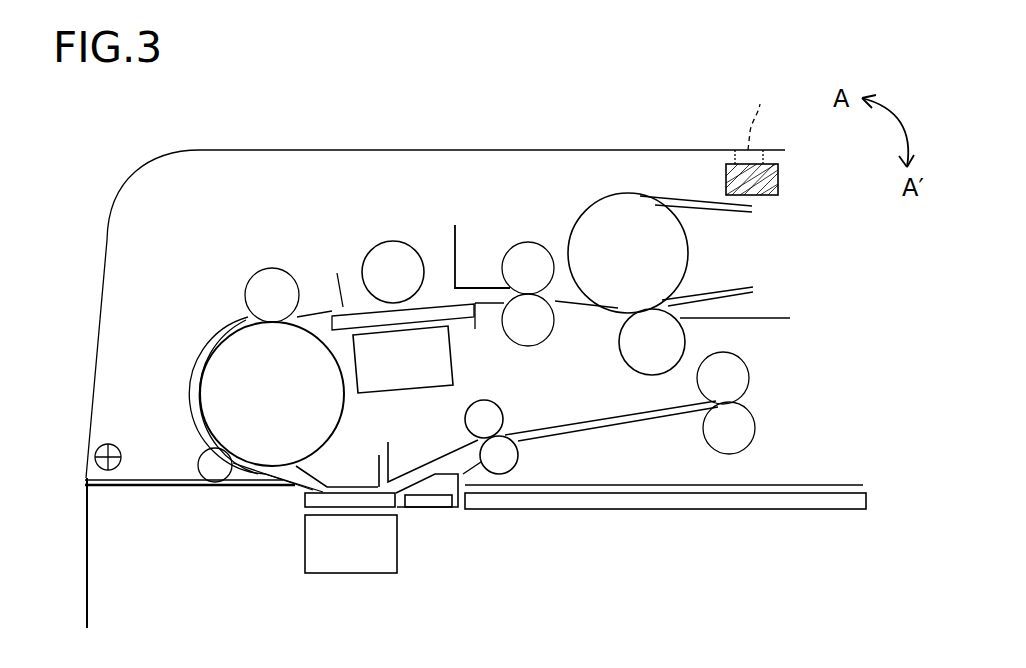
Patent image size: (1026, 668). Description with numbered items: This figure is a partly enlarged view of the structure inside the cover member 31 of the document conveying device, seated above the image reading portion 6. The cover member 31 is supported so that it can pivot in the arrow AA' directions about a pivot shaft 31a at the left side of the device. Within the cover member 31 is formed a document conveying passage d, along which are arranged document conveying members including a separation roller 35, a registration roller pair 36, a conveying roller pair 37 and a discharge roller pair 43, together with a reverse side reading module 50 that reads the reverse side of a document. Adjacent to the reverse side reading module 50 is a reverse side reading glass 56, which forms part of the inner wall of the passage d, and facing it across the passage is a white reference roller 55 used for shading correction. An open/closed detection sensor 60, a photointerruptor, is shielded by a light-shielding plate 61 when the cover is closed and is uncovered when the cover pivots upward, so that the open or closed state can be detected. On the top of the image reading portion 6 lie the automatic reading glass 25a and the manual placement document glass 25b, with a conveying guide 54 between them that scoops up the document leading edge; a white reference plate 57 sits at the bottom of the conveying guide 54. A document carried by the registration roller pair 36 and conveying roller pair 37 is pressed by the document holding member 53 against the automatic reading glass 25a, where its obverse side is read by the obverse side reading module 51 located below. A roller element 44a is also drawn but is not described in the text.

The cover member 31 is at (276, 149).
The pivot shaft 31a is at (97, 452).
The image reading portion 6 is at (85, 595).
The document conveying passage d is at (199, 366).
The reverse side reading glass 56 is at (357, 323).
The white reference roller 55 is at (390, 258).
The reverse side reading module 50 is at (440, 355).
The registration roller pair 36 is at (507, 258).
The heating roller of fixing device 44a is at (573, 235).
The separation roller 35 is at (632, 350).
The open/closed detection sensor 60 is at (779, 178).
The light-shielding plate 61 is at (755, 115).
The document holding member 53 is at (359, 486).
The conveying guide 54 is at (424, 478).
The conveying roller pair 37 is at (515, 455).
The discharge roller pair 43 is at (743, 427).
The automatic reading glass 25a is at (305, 498).
The manual placement document glass 25b is at (722, 504).
The white reference plate 57 is at (428, 502).
The obverse side reading module 51 is at (360, 566).